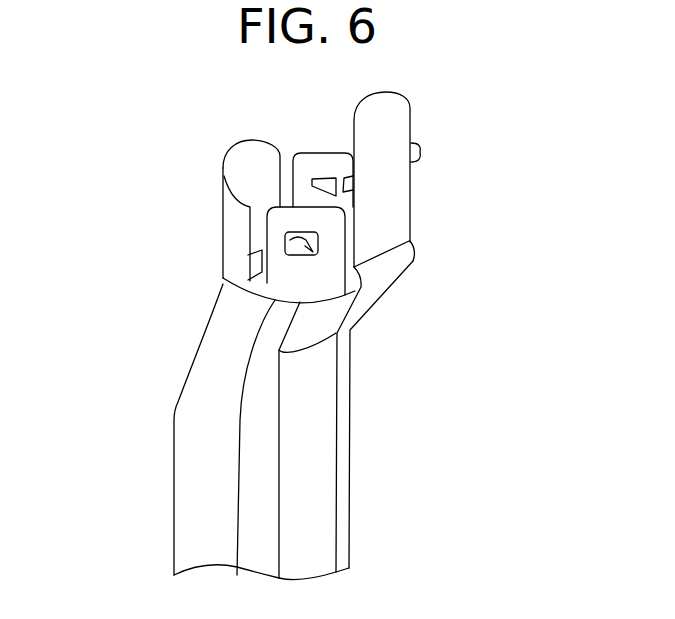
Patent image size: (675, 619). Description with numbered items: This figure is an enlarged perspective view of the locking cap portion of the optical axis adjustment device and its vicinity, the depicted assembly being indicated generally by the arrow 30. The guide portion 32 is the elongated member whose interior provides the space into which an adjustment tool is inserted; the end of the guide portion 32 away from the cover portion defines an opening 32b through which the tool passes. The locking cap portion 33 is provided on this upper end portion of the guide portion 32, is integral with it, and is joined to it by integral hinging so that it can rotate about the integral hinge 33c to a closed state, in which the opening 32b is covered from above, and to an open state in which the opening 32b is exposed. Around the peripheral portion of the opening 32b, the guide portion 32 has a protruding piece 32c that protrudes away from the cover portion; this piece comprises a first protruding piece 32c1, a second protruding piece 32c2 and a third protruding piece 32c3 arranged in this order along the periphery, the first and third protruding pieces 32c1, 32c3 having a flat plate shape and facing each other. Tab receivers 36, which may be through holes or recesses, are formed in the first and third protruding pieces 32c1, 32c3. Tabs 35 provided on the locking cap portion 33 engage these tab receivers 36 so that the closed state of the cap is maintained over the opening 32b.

The terminal 30 is at (350, 497).
The guide portion 32 is at (338, 413).
The opening 32b is at (238, 288).
The protruding piece 32c is at (244, 140).
The first protruding piece 32c1 is at (278, 239).
The second protruding piece 32c2 is at (224, 165).
The third protruding piece 32c3 is at (307, 165).
The locking cap portion 33 is at (390, 103).
The integral hinge 33c is at (403, 253).
The tabs 35 is at (347, 185).
The tab receivers 36 is at (307, 246).